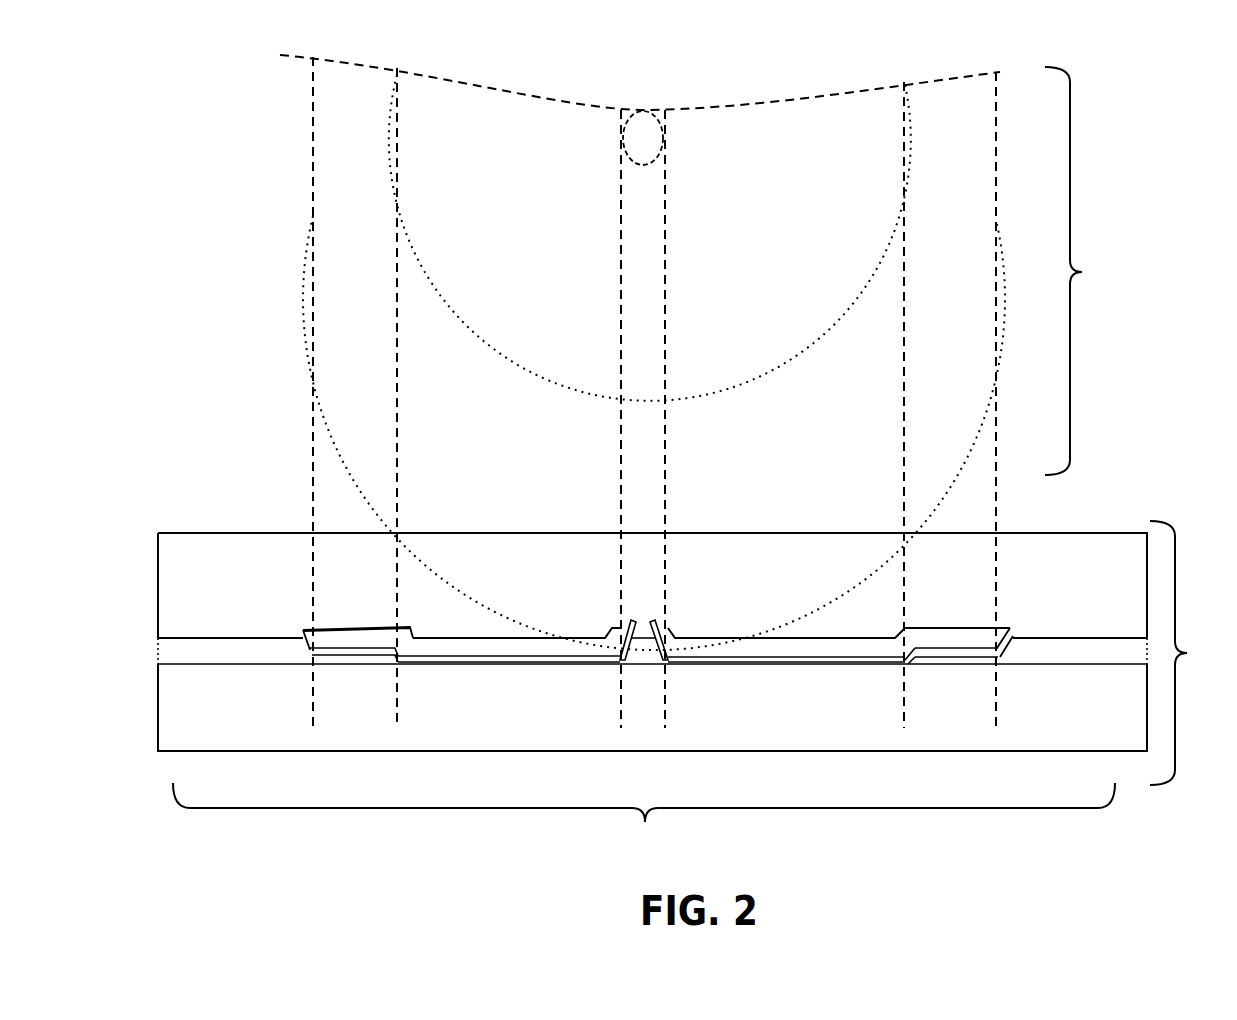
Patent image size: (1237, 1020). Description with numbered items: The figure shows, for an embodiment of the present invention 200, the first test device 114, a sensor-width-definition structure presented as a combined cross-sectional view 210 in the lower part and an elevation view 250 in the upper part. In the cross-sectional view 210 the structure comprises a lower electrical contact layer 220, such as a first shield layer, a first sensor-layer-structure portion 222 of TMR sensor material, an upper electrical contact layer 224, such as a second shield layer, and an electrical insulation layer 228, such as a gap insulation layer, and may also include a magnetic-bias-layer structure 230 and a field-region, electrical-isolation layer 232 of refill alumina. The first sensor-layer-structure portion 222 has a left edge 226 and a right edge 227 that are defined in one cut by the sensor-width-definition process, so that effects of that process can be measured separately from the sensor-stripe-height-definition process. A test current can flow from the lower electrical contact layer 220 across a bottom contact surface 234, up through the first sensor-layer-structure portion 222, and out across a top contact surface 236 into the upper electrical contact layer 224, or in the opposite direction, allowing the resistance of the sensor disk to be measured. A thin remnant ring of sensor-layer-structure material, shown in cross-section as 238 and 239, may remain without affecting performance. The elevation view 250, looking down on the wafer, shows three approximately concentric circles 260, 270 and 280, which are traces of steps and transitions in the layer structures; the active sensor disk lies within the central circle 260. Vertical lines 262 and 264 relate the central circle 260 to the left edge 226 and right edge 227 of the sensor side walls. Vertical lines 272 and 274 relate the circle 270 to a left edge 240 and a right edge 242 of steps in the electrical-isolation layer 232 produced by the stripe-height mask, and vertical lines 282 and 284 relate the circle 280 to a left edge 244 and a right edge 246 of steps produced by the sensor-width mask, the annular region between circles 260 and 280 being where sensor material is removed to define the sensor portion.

The embodiment of the present invention 200 is at (226, 172).
The first test device 114 is at (644, 819).
The cross-sectional view 210 is at (1192, 653).
The lower electrical contact layer 220 is at (1045, 733).
The first sensor-layer-structure portion 222 is at (645, 655).
The upper electrical contact layer 224 is at (875, 615).
The left edge 226 is at (623, 653).
The right edge 227 is at (668, 660).
The electrical insulation layer 228 is at (525, 660).
The magnetic-bias-layer structure 230 is at (475, 648).
The field-region, electrical-isolation layer 232 is at (277, 653).
The bottom contact surface 234 is at (648, 658).
The top contact surface 236 is at (640, 636).
The remnant ring of sensor-layer-structure material 238 is at (392, 665).
The remnant ring of sensor-layer-structure material 239 is at (910, 665).
The left edge 240 is at (397, 650).
The right edge 242 is at (910, 657).
The left edge 244 is at (320, 630).
The right edge 246 is at (1002, 636).
The elevation view 250 is at (1087, 271).
The central circle 260 is at (622, 137).
The vertical line 262 is at (621, 212).
The vertical line 264 is at (666, 218).
The circle 270 is at (503, 350).
The vertical line 272 is at (395, 440).
The vertical line 274 is at (905, 417).
The circle 280 is at (471, 441).
The vertical line 282 is at (312, 436).
The vertical line 284 is at (996, 420).